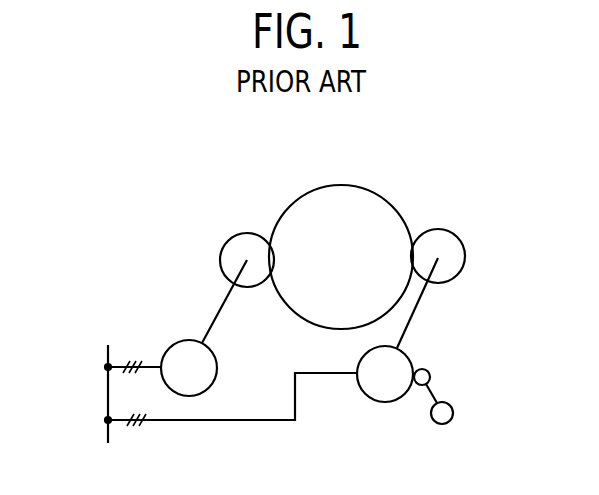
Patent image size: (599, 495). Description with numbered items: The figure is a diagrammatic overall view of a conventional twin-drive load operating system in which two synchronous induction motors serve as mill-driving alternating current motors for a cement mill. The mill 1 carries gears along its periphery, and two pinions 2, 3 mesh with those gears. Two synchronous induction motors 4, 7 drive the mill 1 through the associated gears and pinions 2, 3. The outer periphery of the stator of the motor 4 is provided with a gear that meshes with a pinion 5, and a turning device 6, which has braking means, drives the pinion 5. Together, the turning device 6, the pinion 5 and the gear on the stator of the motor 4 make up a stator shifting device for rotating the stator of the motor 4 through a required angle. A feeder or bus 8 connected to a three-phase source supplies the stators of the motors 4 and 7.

The mill 1 is at (343, 184).
The pinion 2 is at (465, 254).
The pinion 3 is at (222, 246).
The synchronous induction motor 4 is at (385, 402).
The pinion 5 is at (430, 375).
The turning device 6 is at (453, 412).
The synchronous induction motor 7 is at (187, 340).
The feeder or bus 8 is at (106, 395).